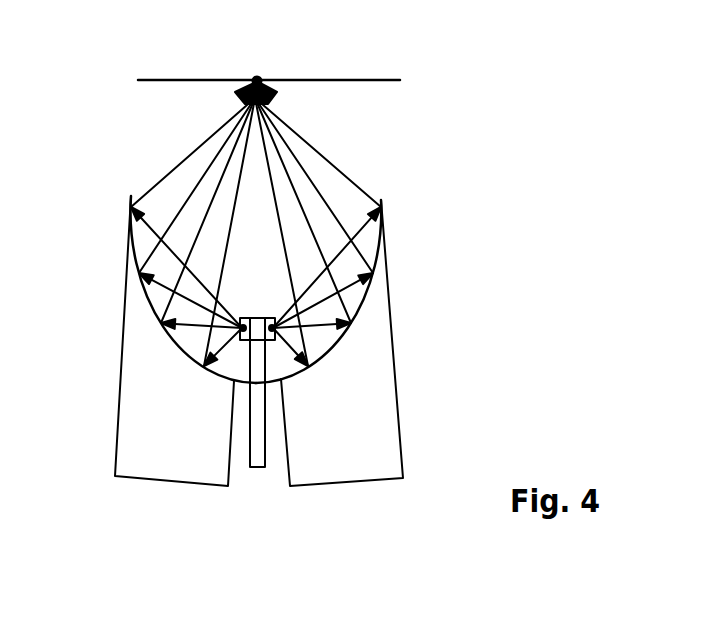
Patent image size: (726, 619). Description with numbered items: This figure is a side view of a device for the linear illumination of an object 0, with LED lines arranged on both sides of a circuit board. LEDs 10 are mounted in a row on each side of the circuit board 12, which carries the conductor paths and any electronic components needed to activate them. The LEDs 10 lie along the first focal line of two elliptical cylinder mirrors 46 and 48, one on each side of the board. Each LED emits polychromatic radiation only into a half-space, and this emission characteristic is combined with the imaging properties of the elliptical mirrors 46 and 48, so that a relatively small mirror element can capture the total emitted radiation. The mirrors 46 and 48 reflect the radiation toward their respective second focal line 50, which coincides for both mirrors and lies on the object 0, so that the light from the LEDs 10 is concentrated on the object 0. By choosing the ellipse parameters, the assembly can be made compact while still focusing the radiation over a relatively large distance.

The object 0 is at (358, 80).
The second focal line 50 is at (275, 80).
The elliptical cylinder mirror 46 is at (172, 338).
The elliptical cylinder mirror 48 is at (347, 337).
The LED 10 is at (280, 320).
The circuit board 12 is at (250, 468).